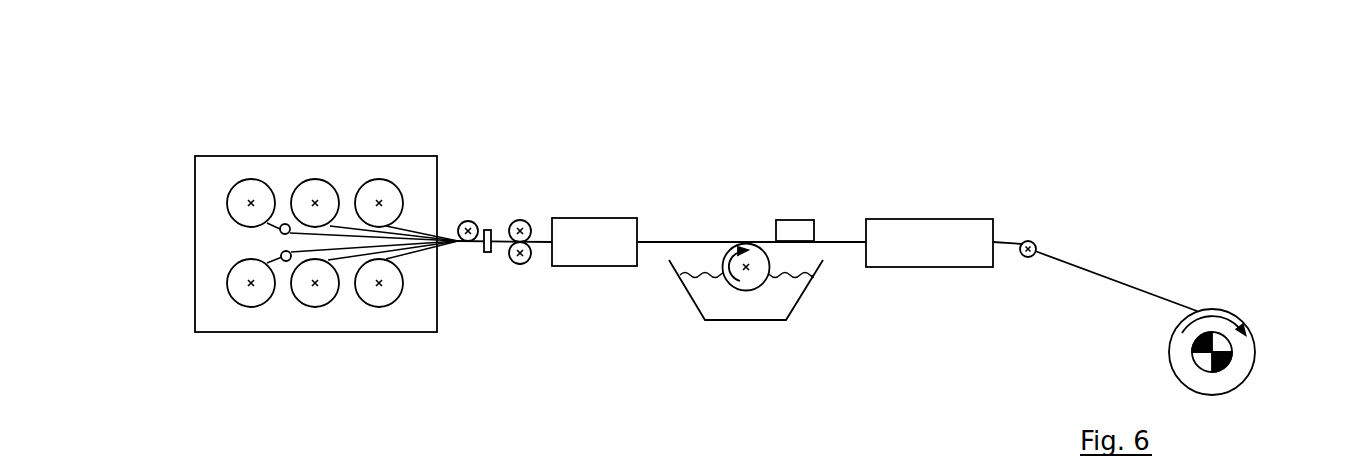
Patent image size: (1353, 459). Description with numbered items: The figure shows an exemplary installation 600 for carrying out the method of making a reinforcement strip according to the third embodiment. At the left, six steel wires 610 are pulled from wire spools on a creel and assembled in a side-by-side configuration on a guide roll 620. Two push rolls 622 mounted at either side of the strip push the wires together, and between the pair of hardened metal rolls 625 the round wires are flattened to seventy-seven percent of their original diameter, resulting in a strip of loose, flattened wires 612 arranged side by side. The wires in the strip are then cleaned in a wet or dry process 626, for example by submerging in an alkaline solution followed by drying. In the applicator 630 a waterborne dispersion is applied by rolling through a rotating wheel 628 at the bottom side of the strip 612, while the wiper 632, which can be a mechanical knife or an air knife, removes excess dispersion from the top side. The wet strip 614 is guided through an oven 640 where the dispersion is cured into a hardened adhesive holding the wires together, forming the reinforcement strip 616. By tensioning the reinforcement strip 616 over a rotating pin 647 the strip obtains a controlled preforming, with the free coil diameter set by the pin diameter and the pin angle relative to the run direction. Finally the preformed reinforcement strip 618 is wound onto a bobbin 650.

The installation 600 is at (188, 139).
The steel wires 610 is at (326, 266).
The strip of loose, flattened wires 612 is at (585, 191).
The wet strip 614 is at (802, 309).
The reinforcement strip 616 is at (951, 169).
The preformed reinforcement strip 618 is at (1097, 299).
The guide roll 620 is at (409, 169).
The push rolls 622 is at (552, 303).
The hardened metal rolls 625 is at (593, 294).
The wet or dry process 626 is at (619, 255).
The rotating wheel 628 is at (746, 318).
The applicator 630 is at (696, 194).
The wiper 632 is at (846, 191).
The oven 640 is at (950, 255).
The rotating pin 647 is at (1087, 199).
The bobbin 650 is at (1249, 311).